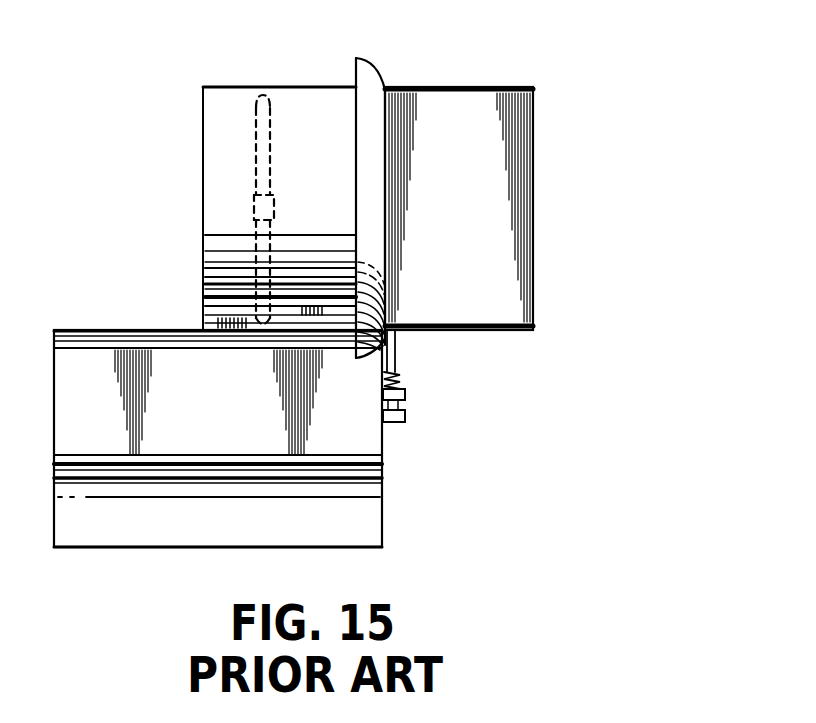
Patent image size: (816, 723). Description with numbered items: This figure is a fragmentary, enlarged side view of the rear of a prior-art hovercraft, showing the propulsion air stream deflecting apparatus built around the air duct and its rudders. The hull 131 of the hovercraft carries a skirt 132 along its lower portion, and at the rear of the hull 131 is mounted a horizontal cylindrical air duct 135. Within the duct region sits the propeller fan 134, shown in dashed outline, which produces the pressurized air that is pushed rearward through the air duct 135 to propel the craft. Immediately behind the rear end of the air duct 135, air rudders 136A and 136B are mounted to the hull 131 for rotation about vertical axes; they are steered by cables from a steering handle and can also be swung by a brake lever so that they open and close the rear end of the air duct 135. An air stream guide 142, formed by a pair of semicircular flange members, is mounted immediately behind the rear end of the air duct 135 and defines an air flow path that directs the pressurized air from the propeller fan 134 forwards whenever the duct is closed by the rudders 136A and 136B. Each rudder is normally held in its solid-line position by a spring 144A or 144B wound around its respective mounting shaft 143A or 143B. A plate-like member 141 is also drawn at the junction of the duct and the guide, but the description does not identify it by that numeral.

The hull 131 is at (85, 330).
The skirt 132 is at (90, 536).
The propeller fan 134 is at (255, 138).
The air duct 135 is at (215, 190).
The air rudder 136A is at (548, 208).
The air rudder 136B is at (535, 156).
The plate 141 is at (355, 68).
The air stream guide 142 is at (372, 65).
The mounting shaft 143A is at (496, 356).
The mounting shaft 143B is at (400, 345).
The spring 144A is at (494, 402).
The spring 144B is at (403, 377).